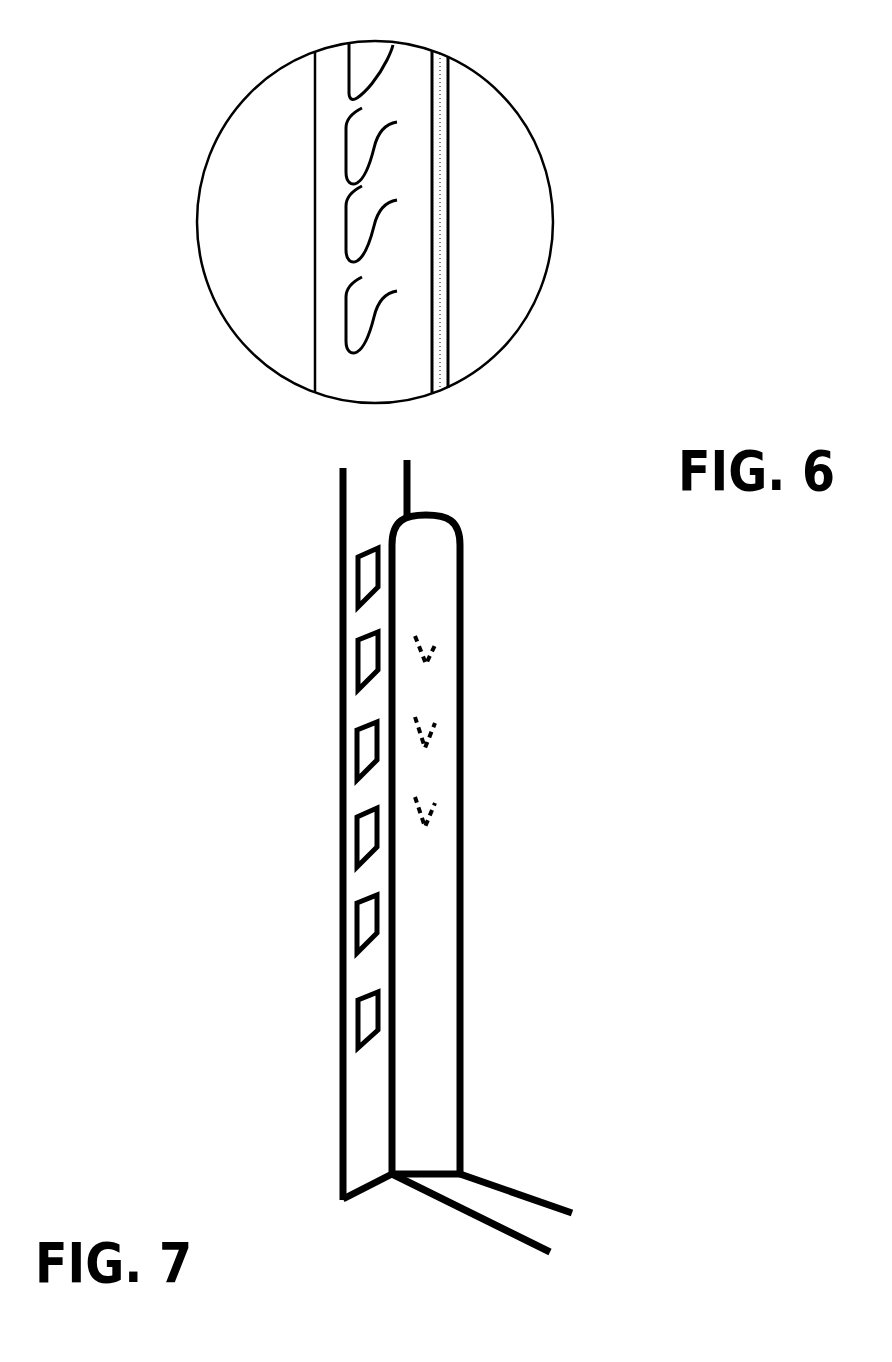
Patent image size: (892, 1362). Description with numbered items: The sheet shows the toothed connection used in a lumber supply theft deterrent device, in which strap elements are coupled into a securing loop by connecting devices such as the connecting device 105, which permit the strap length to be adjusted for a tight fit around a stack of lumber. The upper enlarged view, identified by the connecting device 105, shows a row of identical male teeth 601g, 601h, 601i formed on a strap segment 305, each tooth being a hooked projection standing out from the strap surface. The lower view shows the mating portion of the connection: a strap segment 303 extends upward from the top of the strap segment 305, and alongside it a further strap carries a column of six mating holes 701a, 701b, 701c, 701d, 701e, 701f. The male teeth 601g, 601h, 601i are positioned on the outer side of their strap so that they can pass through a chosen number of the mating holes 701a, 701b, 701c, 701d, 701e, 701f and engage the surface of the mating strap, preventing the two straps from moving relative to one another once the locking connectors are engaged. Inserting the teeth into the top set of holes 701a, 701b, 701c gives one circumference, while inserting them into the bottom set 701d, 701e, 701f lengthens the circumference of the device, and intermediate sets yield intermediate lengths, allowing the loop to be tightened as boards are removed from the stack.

In FIG. 6, the connecting device 105 is at (303, 203).
In FIG. 7, the third connecting strap 303 is at (450, 486).
In FIG. 6, the fifth connecting strap 305 is at (481, 222).
In FIG. 7, the fifth connecting strap 305 is at (470, 844).
In FIG. 6, the male tooth 601g is at (363, 152).
In FIG. 7, the male tooth 601g is at (490, 638).
In FIG. 6, the male tooth 601h is at (365, 208).
In FIG. 7, the male tooth 601h is at (490, 720).
In FIG. 6, the male tooth 601i is at (358, 295).
In FIG. 7, the male tooth 601i is at (487, 798).
In FIG. 7, the mating hole 701a is at (308, 576).
In FIG. 7, the mating hole 701b is at (308, 658).
In FIG. 7, the mating hole 701c is at (307, 745).
In FIG. 7, the mating hole 701d is at (307, 830).
In FIG. 7, the mating hole 701e is at (307, 914).
In FIG. 7, the mating hole 701f is at (310, 1016).